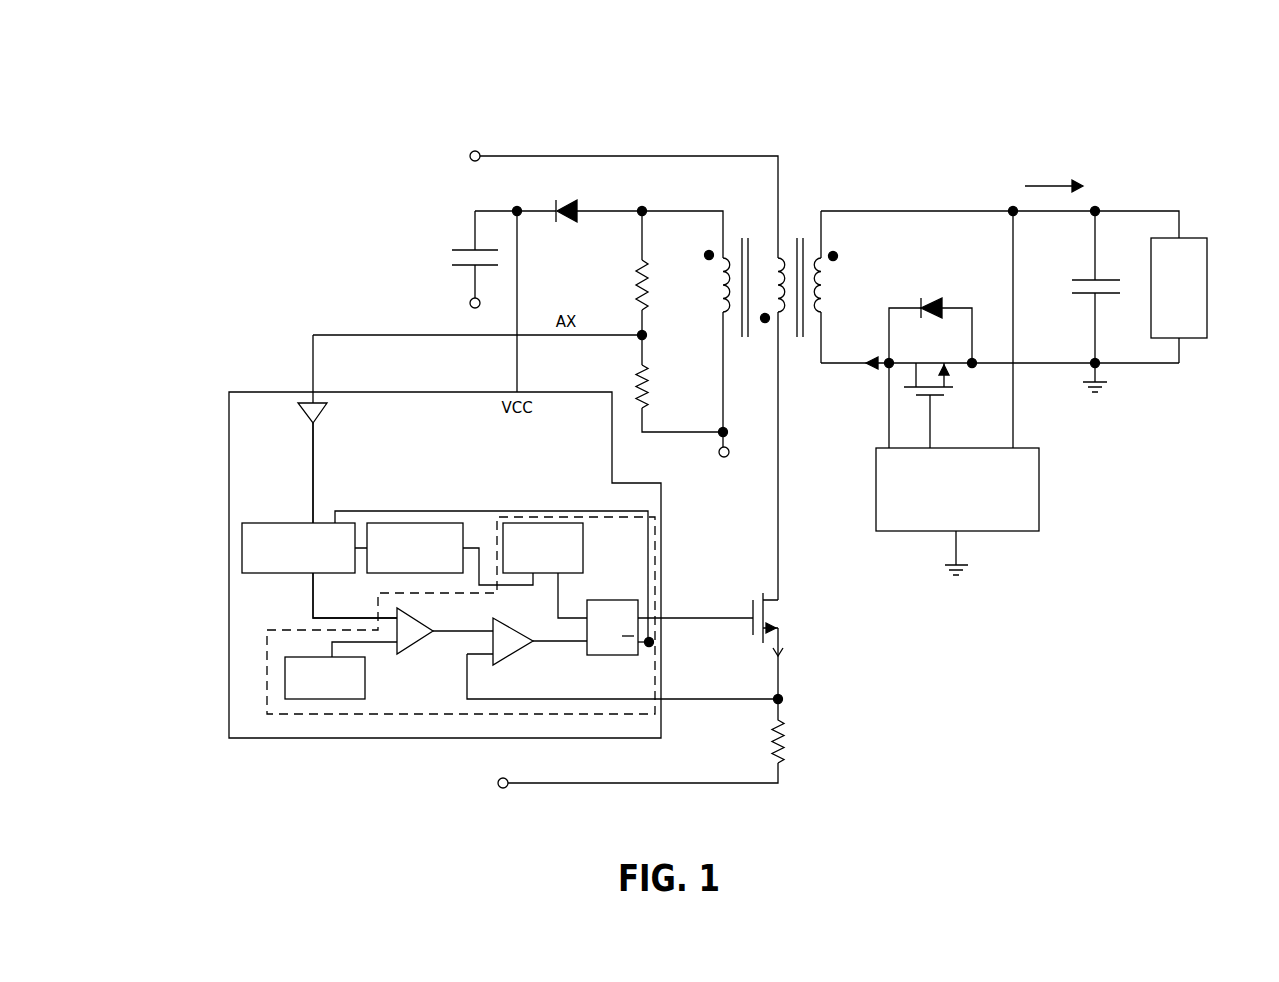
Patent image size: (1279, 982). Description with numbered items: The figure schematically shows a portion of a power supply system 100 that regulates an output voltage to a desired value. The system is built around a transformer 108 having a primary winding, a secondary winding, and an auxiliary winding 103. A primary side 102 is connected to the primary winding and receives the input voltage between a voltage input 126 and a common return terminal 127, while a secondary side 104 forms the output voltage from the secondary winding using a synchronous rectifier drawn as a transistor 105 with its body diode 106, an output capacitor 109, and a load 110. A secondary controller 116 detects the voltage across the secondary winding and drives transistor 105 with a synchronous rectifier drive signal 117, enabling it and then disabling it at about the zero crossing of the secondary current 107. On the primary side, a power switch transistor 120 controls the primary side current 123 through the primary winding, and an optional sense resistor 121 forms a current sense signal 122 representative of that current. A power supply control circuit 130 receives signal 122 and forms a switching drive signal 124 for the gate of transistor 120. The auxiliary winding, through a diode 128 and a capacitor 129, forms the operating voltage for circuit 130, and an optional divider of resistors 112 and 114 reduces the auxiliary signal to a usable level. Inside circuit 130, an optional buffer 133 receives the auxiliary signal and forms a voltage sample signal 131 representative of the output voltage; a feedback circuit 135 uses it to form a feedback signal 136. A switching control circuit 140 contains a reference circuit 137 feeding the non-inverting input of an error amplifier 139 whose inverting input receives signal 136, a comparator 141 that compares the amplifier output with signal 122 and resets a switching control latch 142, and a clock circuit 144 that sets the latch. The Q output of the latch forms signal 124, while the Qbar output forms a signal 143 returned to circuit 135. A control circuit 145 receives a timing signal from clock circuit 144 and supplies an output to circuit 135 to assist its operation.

The power supply system 100 is at (118, 86).
The primary side 102 is at (447, 106).
The auxiliary winding 103 is at (700, 238).
The secondary side 104 is at (1043, 103).
The transistor 105 is at (921, 371).
The body diode 106 is at (943, 301).
The current 107 is at (875, 368).
The transformer 108 is at (750, 229).
The output capacitor 109 is at (1072, 287).
The load 110 is at (1207, 308).
The resistor 112 is at (658, 285).
The resistor 114 is at (658, 386).
The synchronous rectifier control circuit 116 is at (957, 511).
The SRD signal 117 is at (932, 414).
The transistor 120 is at (768, 588).
The resistor 121 is at (787, 762).
The current sense signal 122 is at (785, 700).
The primary side current 123 is at (785, 650).
The switching drive signal 124 is at (673, 615).
The voltage input 126 is at (480, 151).
The common return terminal 127 is at (470, 303).
The diode 128 is at (576, 224).
The capacitor 129 is at (457, 258).
The power supply control circuit 130 is at (408, 391).
The voltage sample signal 131 is at (316, 460).
The buffer circuit 133 is at (327, 414).
The feedback circuit 135 is at (252, 522).
The feedback signal 136 is at (312, 613).
The reference generation circuit 137 is at (366, 670).
The error amplifier circuit 139 is at (422, 617).
The switching control circuit 140 is at (267, 710).
The comparator 141 is at (522, 649).
The switching control latch 142 is at (617, 598).
The signal 143 is at (648, 656).
The clock circuit 144 is at (583, 525).
The control circuit 145 is at (441, 522).